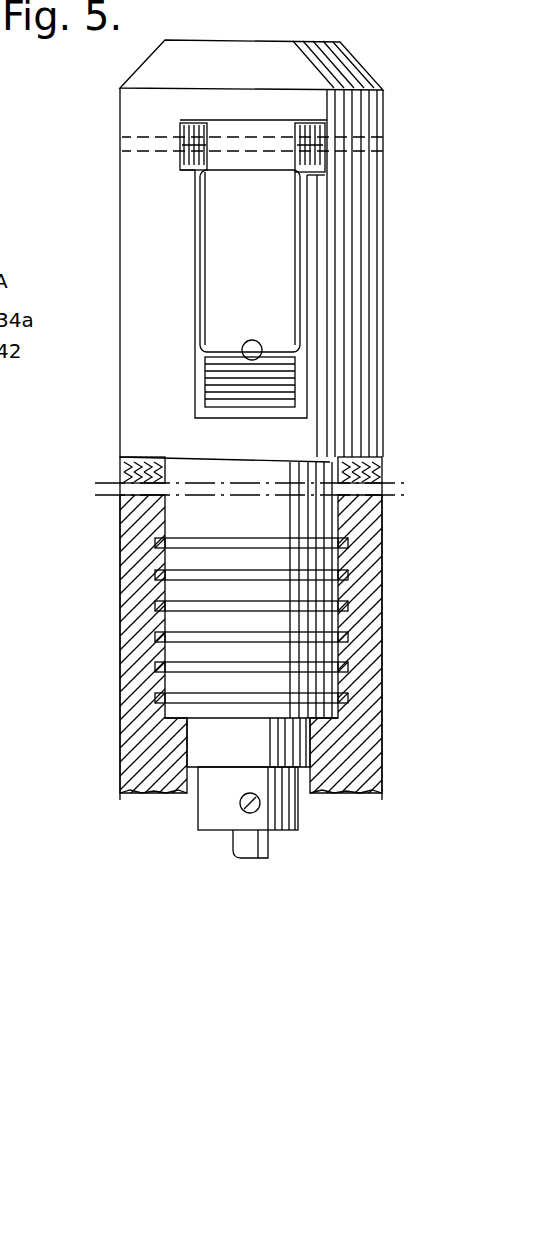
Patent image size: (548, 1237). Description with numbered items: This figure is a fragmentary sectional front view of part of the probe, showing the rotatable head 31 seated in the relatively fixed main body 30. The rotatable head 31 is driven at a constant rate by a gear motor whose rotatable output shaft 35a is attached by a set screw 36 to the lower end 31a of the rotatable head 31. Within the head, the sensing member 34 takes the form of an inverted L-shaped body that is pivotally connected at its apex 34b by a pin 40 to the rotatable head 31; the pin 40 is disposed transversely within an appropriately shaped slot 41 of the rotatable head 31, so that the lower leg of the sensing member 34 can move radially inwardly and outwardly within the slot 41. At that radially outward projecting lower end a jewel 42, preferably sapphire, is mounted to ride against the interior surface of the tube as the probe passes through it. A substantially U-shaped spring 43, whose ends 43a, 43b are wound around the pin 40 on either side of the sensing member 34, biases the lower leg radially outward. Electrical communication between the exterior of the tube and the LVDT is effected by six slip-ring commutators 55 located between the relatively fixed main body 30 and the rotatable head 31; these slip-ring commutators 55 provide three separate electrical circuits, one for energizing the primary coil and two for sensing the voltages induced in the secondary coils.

The main body 30 is at (372, 542).
The rotatable head 31 is at (143, 212).
The lower end of rotatable head 31a is at (285, 828).
The sensing member 34 is at (272, 259).
The apex of sensing member 34b is at (257, 120).
The output shaft 35a is at (270, 847).
The set screw 36 is at (237, 805).
The pin 40 is at (148, 152).
The slot 41 is at (193, 262).
The jewel 42 is at (254, 340).
The U-shaped spring 43 is at (302, 235).
The spring end 43a is at (180, 120).
The spring end 43b is at (323, 128).
The slip-ring commutators 55 is at (157, 605).